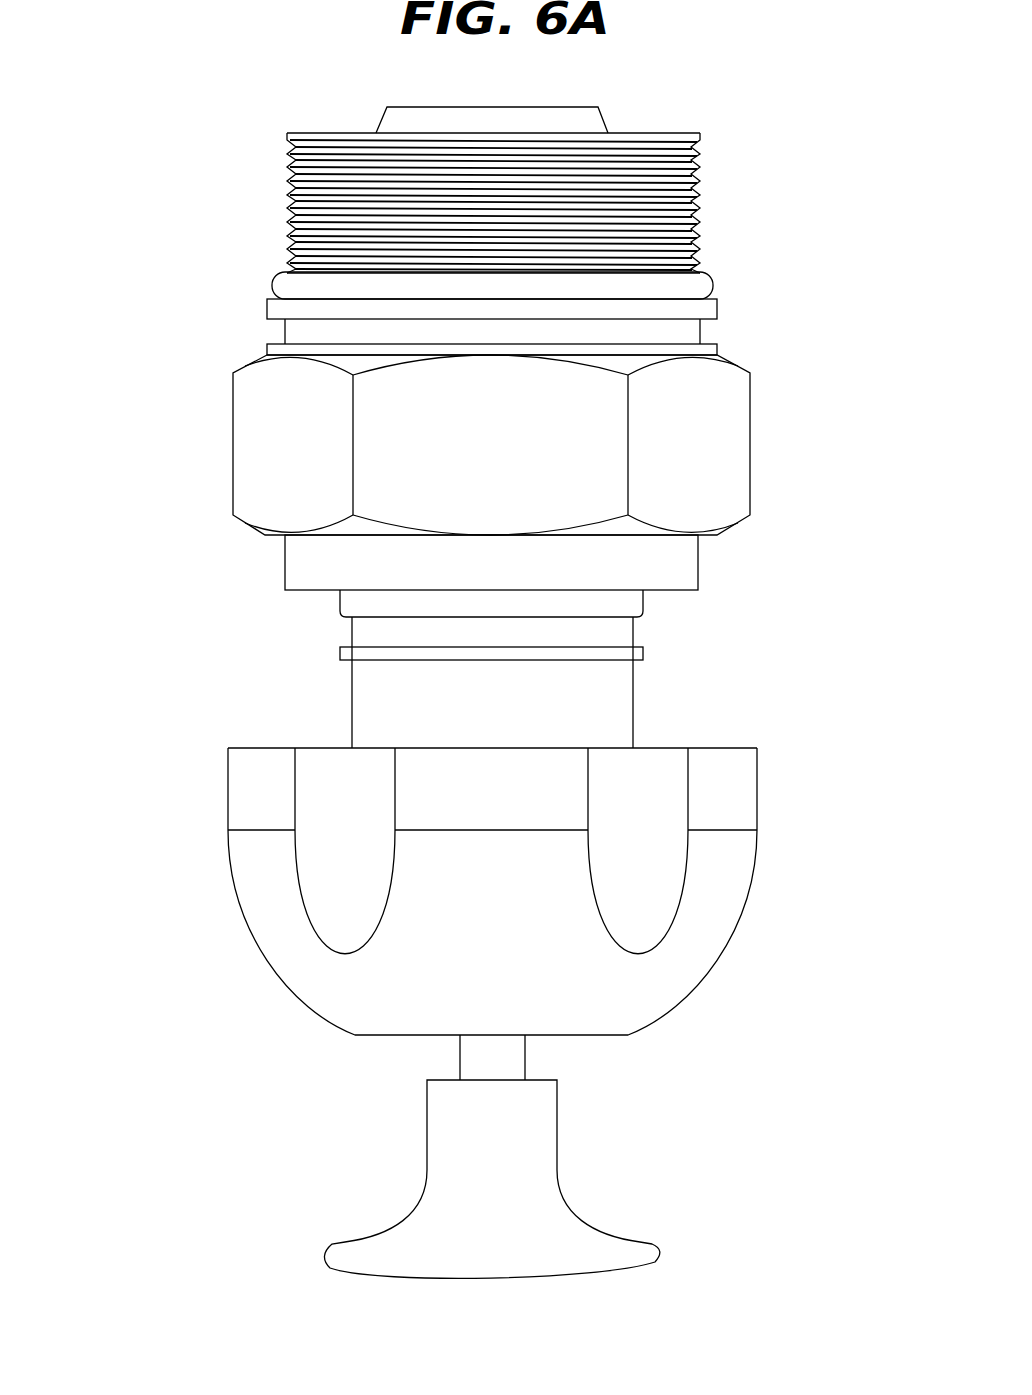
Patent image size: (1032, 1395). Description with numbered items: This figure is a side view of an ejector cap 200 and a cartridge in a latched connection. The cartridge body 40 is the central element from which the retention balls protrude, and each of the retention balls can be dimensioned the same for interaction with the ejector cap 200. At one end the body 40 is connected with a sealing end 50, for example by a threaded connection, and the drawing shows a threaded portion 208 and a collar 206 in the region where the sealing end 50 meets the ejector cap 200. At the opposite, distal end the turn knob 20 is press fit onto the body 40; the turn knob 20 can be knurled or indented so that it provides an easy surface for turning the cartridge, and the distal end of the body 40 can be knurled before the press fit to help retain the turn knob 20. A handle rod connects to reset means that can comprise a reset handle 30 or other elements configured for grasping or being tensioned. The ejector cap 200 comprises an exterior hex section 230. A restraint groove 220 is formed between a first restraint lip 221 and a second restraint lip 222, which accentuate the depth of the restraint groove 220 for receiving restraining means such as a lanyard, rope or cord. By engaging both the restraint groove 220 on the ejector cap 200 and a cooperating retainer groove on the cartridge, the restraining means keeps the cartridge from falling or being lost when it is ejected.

The sealing end 50 is at (410, 120).
The threaded portion 208 is at (702, 190).
The collar 206 is at (713, 287).
The first restraint lip 221 is at (265, 307).
The restraint groove 220 is at (287, 330).
The second restraint lip 222 is at (720, 348).
The exterior hex section 230 is at (248, 485).
The ejector cap 200 is at (690, 563).
The body 40 is at (360, 707).
The turn knob 20 is at (690, 953).
The reset handle 30 is at (650, 1258).